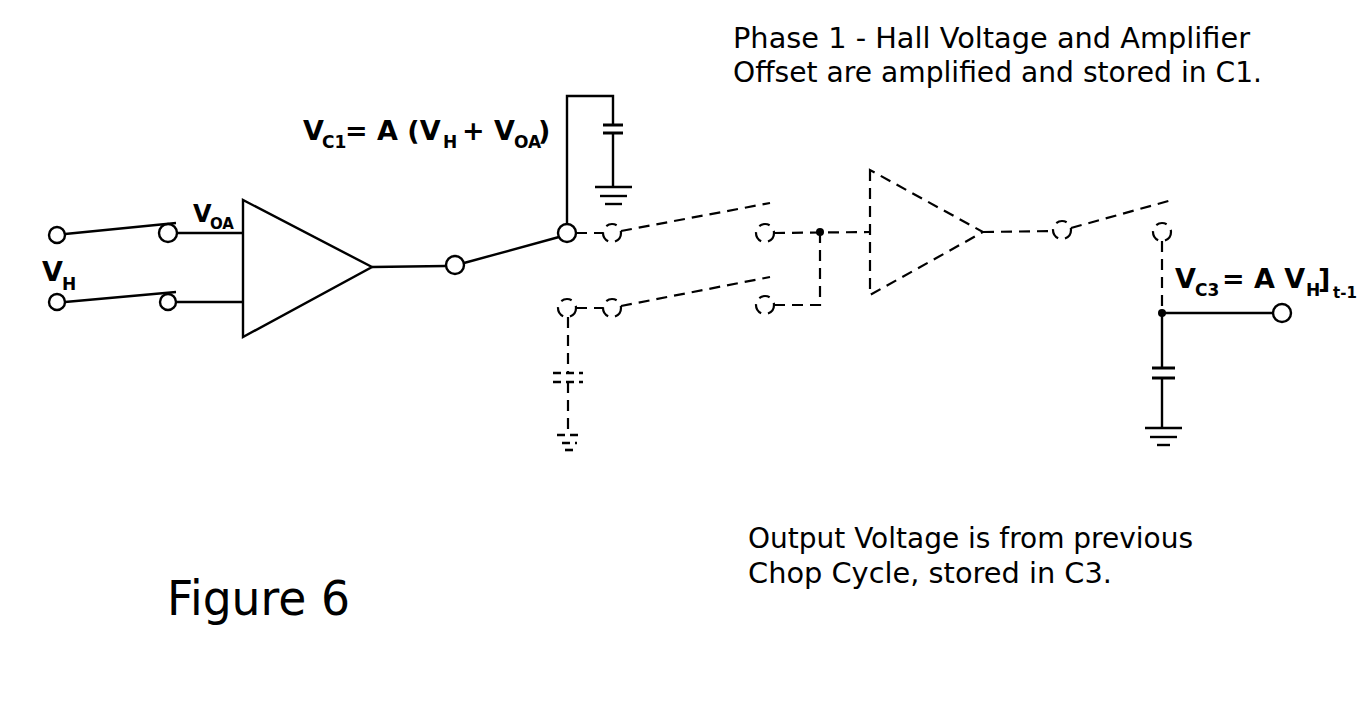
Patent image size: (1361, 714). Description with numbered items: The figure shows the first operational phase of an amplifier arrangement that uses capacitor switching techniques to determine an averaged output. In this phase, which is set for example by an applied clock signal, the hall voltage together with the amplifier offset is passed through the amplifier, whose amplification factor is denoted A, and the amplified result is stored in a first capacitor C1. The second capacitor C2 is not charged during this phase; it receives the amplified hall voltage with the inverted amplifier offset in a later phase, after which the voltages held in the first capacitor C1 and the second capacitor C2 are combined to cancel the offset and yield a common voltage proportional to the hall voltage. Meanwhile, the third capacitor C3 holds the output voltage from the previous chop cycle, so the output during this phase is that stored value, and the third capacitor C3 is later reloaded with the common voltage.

The amplification factor A is at (307, 268).
The first capacitor C1 is at (632, 160).
The second capacitor C2 is at (590, 383).
The third capacitor C3 is at (1185, 379).